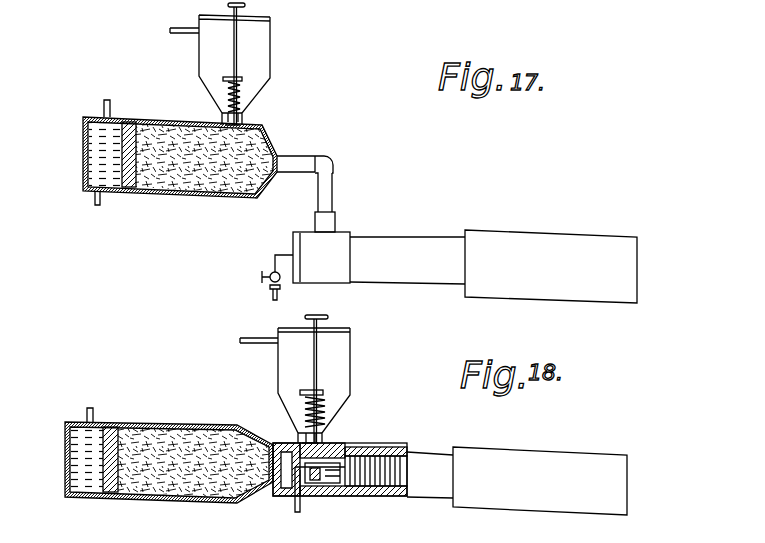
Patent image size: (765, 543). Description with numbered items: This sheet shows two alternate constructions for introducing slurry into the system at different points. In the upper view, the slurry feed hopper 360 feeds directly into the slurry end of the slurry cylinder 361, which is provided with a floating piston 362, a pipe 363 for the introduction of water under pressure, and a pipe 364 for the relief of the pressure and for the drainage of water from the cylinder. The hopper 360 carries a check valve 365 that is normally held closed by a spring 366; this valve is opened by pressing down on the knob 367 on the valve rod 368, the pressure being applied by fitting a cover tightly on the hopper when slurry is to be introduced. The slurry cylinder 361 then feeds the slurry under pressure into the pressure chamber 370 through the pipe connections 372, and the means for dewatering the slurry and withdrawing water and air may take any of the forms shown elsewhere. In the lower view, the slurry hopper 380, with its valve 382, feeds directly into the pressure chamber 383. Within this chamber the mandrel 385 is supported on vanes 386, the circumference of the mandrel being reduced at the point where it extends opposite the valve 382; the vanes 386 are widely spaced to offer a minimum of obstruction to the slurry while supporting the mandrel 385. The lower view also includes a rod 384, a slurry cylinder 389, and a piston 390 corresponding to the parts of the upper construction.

In FIG. 17, the slurry feed hopper 360 is at (258, 57).
In FIG. 17, the slurry cylinder 361 is at (268, 134).
In FIG. 17, the floating piston 362 is at (127, 180).
In FIG. 17, the pipe 363 is at (110, 105).
In FIG. 17, the pipe 364 is at (95, 204).
In FIG. 17, the check valve 365 is at (245, 117).
In FIG. 17, the spring 366 is at (237, 97).
In FIG. 17, the knob 367 is at (246, 5).
In FIG. 17, the valve rod 368 is at (237, 43).
In FIG. 17, the pressure chamber 370 is at (332, 245).
In FIG. 17, the pipe connections 372 is at (333, 193).
In FIG. 18, the slurry hopper 380 is at (338, 350).
In FIG. 18, the valve 382 is at (320, 440).
In FIG. 18, the pressure chamber 383 is at (340, 450).
In FIG. 18, the rod 384 is at (293, 506).
In FIG. 18, the mandrel 385 is at (310, 497).
In FIG. 18, the vanes 386 is at (335, 492).
In FIG. 18, the cylinder 389 is at (188, 426).
In FIG. 18, the piston 390 is at (114, 425).